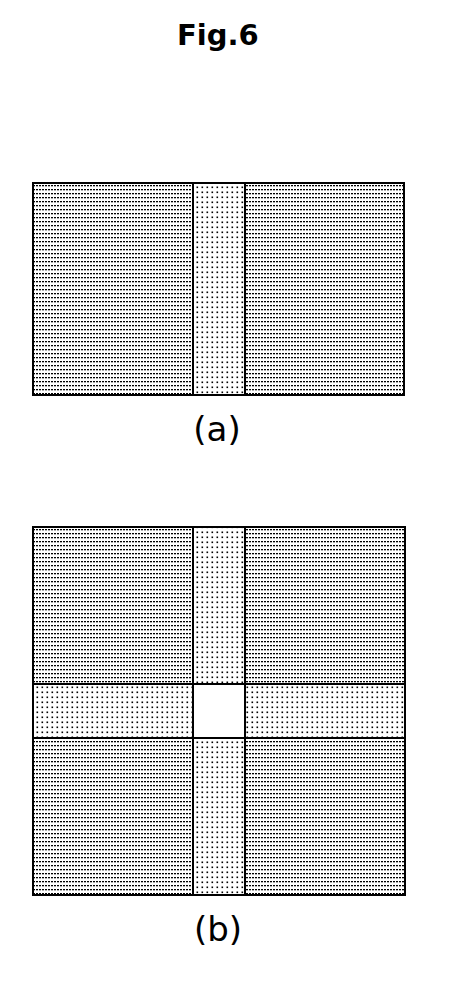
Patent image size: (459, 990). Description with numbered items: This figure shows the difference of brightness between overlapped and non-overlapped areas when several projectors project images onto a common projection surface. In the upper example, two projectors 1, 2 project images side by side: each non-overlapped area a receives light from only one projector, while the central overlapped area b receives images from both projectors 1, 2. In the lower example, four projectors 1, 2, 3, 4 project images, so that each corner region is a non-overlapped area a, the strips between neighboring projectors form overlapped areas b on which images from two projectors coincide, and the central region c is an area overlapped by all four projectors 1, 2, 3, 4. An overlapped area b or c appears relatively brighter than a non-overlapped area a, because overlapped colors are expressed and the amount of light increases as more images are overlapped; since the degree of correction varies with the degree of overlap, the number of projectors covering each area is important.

The non-overlapped area a is at (219, 539).
The overlapped area b is at (219, 539).
The area overlapped by four projectors c is at (219, 711).
The projector 1 is at (45, 351).
The projector 2 is at (392, 351).
The projector 3 is at (45, 898).
The projector 4 is at (392, 898).